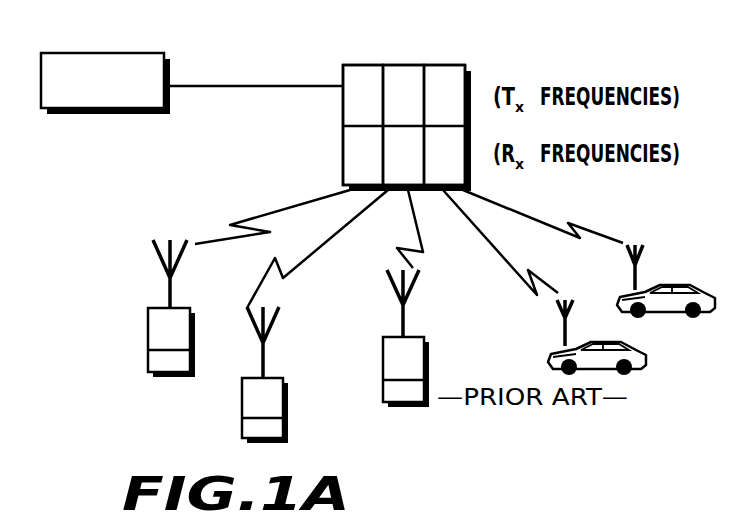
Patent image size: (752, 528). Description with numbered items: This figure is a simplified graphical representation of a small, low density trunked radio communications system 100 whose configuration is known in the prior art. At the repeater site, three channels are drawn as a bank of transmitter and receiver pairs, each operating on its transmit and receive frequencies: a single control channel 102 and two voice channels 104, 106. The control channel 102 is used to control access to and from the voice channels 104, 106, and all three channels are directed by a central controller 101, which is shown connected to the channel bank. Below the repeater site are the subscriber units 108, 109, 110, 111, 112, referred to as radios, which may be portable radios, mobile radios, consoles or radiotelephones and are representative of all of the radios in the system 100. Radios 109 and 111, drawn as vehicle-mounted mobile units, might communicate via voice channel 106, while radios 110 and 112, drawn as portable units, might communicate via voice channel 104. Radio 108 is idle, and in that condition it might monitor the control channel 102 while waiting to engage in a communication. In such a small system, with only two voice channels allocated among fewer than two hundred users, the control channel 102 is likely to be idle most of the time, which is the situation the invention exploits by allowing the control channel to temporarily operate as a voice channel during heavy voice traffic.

The trunked radio communications system 100 is at (83, 183).
The central controller 101 is at (108, 53).
The control channel 102 is at (374, 65).
The voice channel 104 is at (413, 65).
The voice channel 106 is at (442, 65).
The subscriber unit (radio) 108 is at (171, 378).
The subscriber unit (radio) 109 is at (558, 350).
The subscriber unit (radio) 110 is at (268, 445).
The subscriber unit (radio) 111 is at (665, 288).
The subscriber unit (radio) 112 is at (388, 406).